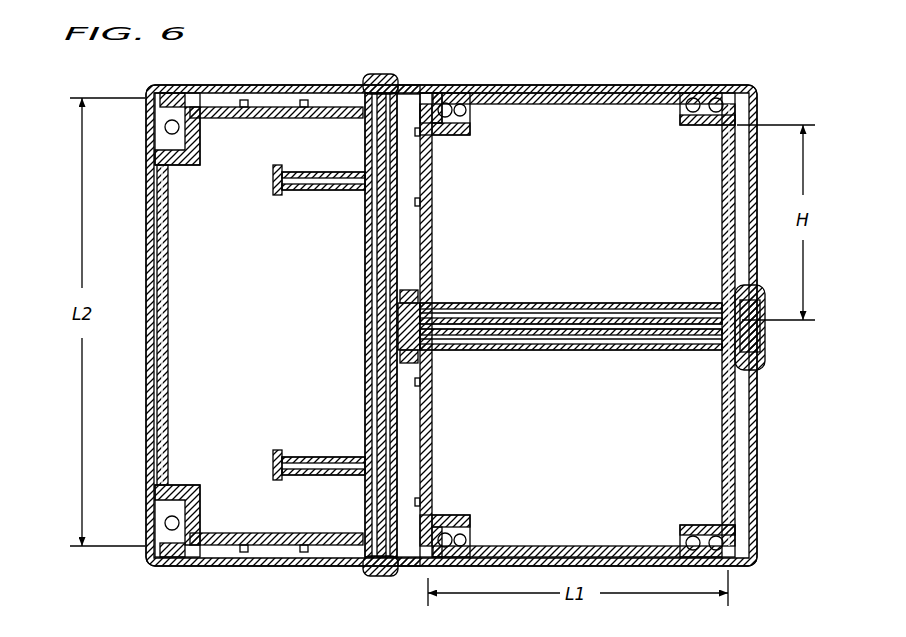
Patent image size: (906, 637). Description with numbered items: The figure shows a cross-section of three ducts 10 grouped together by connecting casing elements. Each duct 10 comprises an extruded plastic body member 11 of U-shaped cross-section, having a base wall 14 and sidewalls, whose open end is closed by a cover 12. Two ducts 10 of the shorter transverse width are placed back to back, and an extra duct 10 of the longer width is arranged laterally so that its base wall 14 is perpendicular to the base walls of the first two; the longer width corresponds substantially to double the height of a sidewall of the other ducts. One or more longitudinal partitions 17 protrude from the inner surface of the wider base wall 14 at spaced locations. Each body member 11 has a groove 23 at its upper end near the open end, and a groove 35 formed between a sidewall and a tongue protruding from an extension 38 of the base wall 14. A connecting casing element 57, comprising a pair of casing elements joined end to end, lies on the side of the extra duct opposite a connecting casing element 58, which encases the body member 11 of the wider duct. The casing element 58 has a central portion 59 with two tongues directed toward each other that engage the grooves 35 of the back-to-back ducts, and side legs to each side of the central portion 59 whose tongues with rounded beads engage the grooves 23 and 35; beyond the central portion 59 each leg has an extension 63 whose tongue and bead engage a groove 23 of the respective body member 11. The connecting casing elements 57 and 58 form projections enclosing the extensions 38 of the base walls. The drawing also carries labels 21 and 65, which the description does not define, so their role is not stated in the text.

The duct 10 is at (692, 70).
The body member 11 is at (740, 150).
The cover 12 is at (445, 0).
The base wall 14 is at (365, 326).
The partition 17 is at (300, 198).
The panel 21 is at (352, 0).
The groove 23 is at (177, 110).
The groove 35 is at (372, 128).
The extension 38 is at (398, 88).
The connecting casing element 57 is at (762, 202).
The connecting casing element 58 is at (258, 78).
The central portion 59 is at (432, 204).
The extension 63 is at (430, 88).
The cap 65 is at (376, 76).